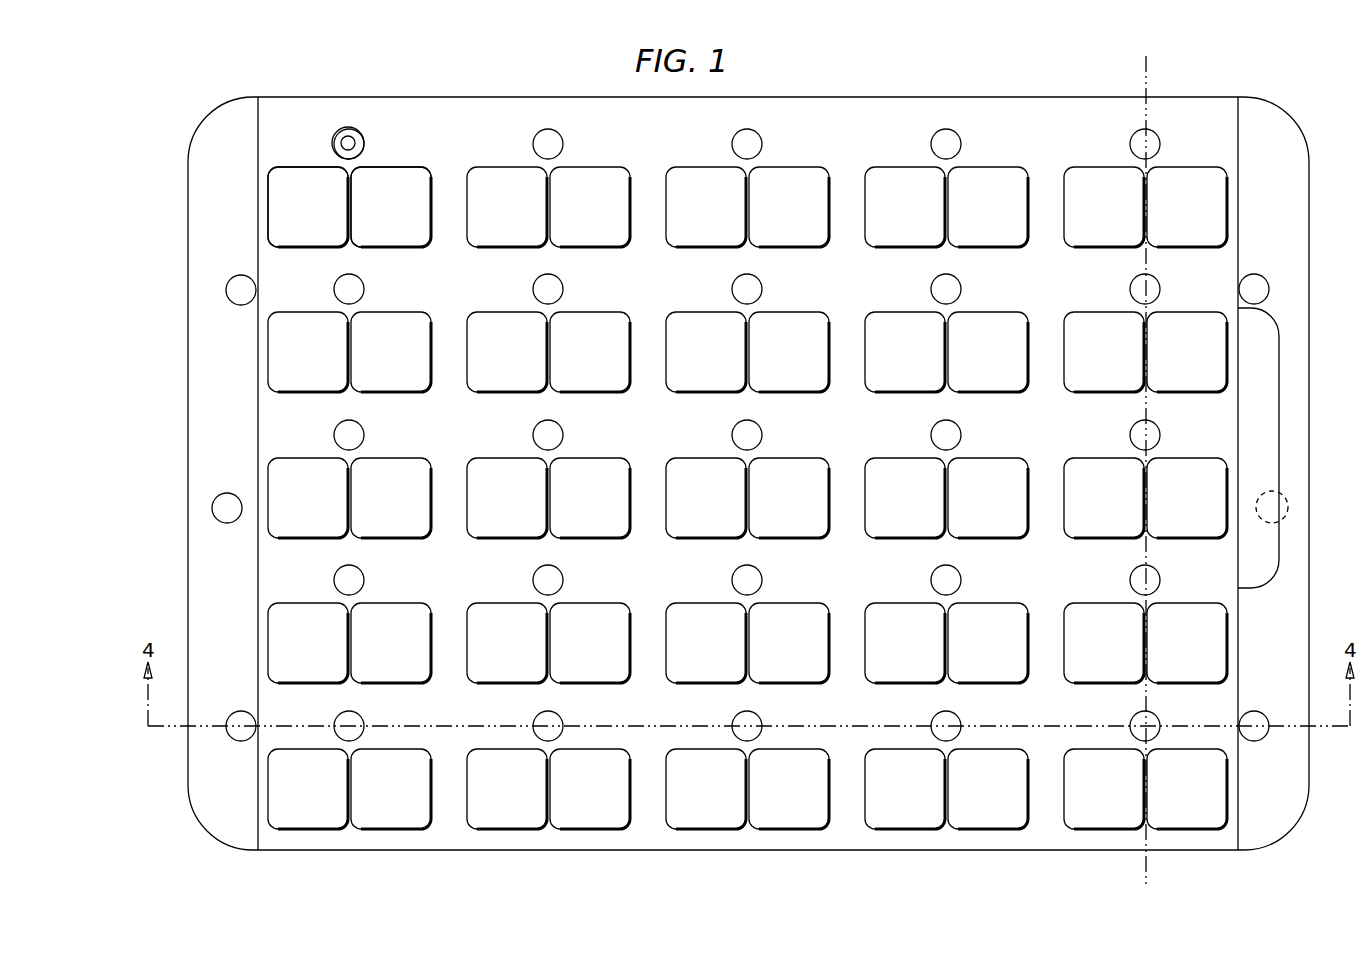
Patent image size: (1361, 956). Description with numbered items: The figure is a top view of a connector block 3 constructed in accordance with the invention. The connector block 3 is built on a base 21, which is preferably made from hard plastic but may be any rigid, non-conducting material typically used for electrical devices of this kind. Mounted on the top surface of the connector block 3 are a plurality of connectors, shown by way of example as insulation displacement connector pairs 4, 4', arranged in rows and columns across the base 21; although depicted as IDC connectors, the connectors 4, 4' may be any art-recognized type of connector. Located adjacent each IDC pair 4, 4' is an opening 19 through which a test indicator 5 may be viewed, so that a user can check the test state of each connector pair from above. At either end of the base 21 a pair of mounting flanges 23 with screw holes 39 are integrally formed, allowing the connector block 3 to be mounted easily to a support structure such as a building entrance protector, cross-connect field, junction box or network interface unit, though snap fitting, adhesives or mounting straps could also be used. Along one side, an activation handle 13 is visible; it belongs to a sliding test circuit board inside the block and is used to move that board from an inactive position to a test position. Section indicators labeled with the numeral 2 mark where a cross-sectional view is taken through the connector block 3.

The connector block 3 is at (870, 92).
The base 21 is at (1015, 118).
The mounting flanges 23 is at (207, 225).
The screw holes 39 is at (228, 508).
The activation handle 13 is at (1279, 372).
The test indicator 5 is at (338, 141).
The opening 19 is at (361, 130).
The insulation displacement connector 4 is at (308, 184).
The insulation displacement connector 4' is at (391, 184).
The section line 2- 2 is at (1146, 56).